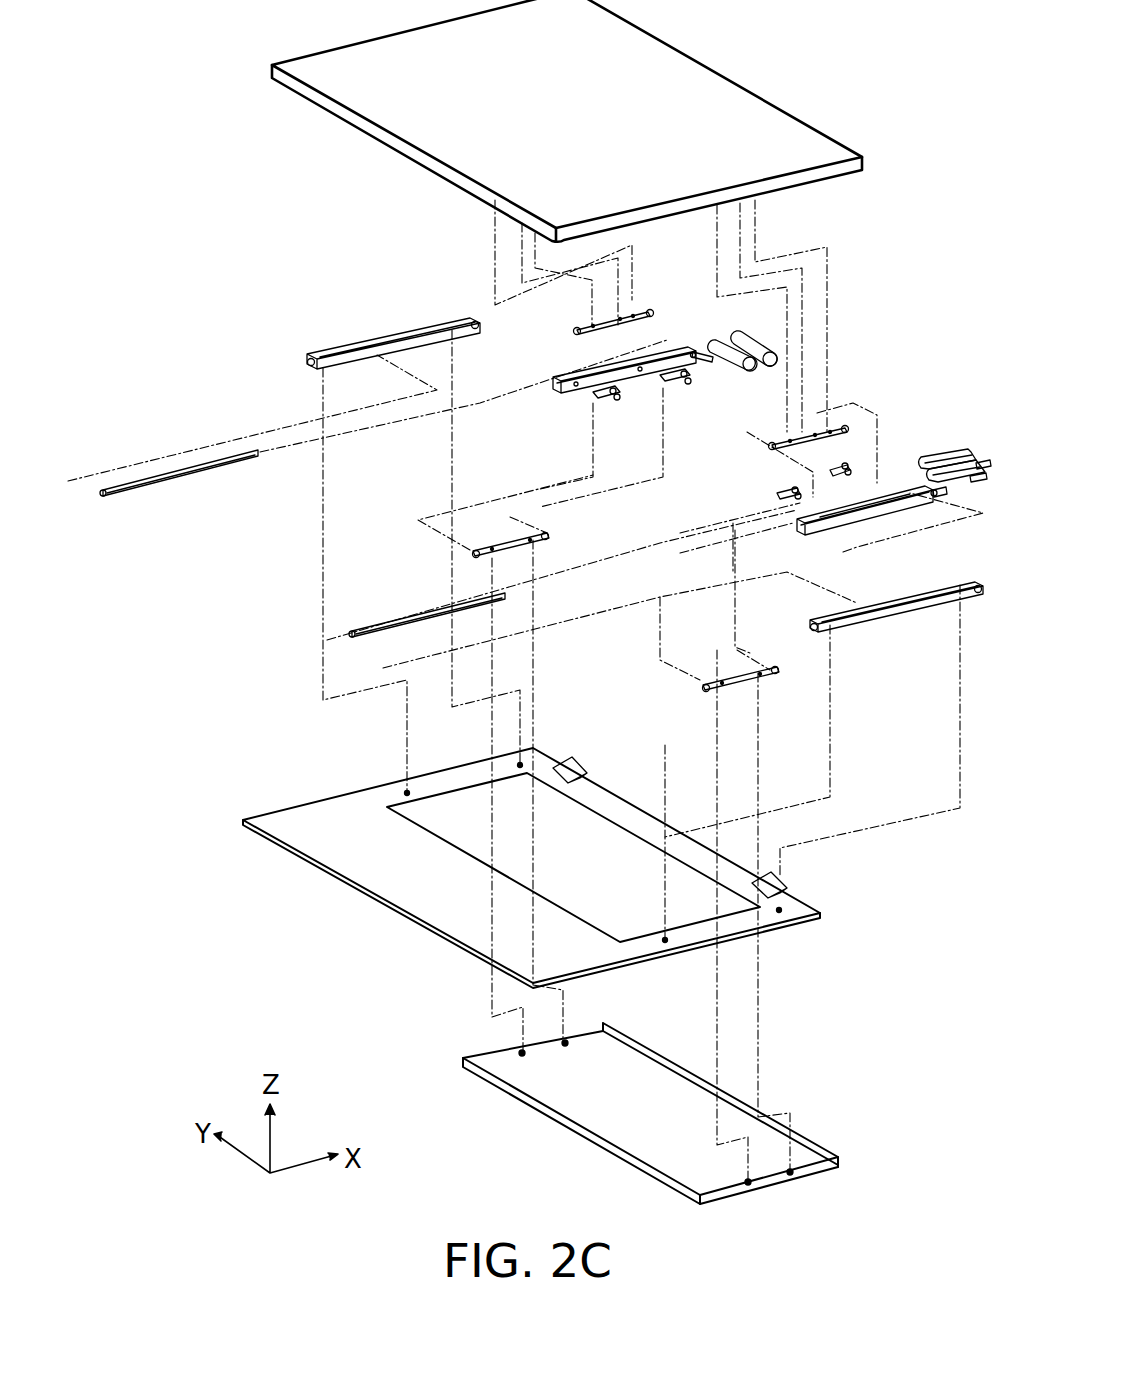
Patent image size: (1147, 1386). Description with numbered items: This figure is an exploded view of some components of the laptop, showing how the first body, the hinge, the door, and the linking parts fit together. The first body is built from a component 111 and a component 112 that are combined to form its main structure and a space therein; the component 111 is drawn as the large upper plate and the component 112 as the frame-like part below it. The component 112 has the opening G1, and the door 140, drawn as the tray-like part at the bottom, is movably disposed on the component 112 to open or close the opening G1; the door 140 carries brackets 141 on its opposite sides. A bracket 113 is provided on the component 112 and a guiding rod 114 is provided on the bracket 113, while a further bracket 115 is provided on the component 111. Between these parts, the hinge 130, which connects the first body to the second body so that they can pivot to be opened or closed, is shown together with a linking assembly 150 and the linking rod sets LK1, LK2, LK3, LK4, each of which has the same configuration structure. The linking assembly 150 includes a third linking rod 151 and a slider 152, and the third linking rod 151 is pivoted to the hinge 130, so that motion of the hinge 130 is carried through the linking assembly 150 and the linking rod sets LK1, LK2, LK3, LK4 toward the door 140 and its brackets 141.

The component 111 is at (318, 57).
The component 112 is at (268, 823).
The bracket 113 is at (390, 343).
The guiding rod 114 is at (181, 478).
The bracket 115 is at (590, 330).
The hinge 130 is at (752, 345).
The door 140 is at (605, 1145).
The bracket 141 is at (505, 532).
The linking assembly 150 is at (156, 104).
The third linking rod 151 is at (700, 350).
The slider 152 is at (572, 393).
The linking rod set LK1 is at (622, 406).
The linking rod set LK2 is at (689, 395).
The linking rod set LK3 is at (766, 488).
The linking rod set LK4 is at (852, 460).
The opening G1 is at (602, 846).